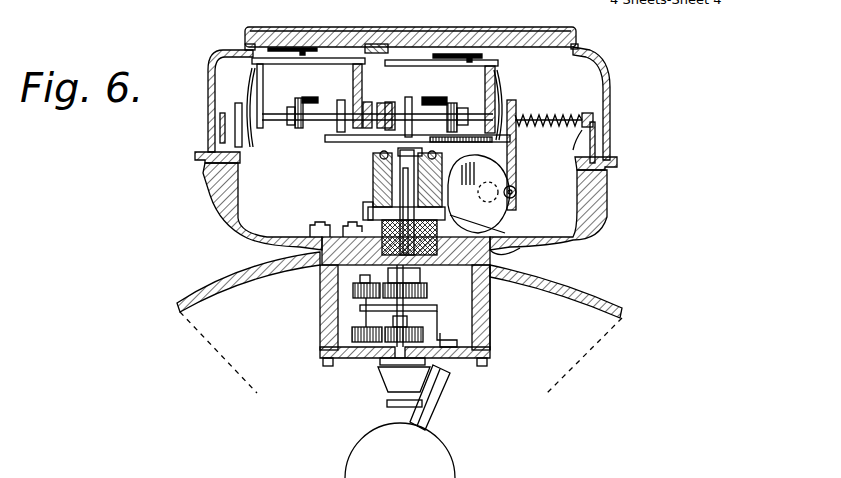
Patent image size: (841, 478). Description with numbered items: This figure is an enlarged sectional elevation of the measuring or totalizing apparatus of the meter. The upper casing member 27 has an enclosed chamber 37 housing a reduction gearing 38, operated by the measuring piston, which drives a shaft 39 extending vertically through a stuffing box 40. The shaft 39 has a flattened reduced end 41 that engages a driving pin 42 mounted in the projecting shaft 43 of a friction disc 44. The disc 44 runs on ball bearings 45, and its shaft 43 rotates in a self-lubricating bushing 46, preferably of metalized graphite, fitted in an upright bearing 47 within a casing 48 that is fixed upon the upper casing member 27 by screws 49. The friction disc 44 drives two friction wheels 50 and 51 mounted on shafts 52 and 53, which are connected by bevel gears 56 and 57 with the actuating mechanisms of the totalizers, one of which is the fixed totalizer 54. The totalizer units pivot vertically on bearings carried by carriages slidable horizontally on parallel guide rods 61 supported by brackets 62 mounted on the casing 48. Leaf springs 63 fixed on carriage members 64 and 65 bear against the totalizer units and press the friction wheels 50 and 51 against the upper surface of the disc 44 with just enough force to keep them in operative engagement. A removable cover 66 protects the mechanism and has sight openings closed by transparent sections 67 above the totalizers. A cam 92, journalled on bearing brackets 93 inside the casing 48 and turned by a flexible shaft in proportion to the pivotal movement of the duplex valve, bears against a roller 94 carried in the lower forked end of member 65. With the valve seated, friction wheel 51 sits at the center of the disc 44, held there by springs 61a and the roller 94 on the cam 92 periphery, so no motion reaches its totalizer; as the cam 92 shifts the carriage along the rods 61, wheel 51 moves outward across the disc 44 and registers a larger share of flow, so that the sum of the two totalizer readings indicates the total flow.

The upper casing member 27 is at (212, 287).
The enclosed chamber 37 is at (483, 330).
The reduction gearing 38 is at (425, 330).
The shaft 39 is at (393, 267).
The stuffing box 40 is at (365, 212).
The flattened reduced end 41 is at (373, 187).
The driving pin 42 is at (375, 205).
The shaft of friction disc 43 is at (380, 146).
The friction disc 44 is at (516, 143).
The ball bearings 45 is at (505, 160).
The bushing 46 is at (500, 217).
The upright bearing 47 is at (372, 170).
The casing 48 is at (217, 197).
The screws 49 is at (312, 230).
The friction wheel 50 is at (340, 102).
The friction wheel 51 is at (408, 100).
The shaft 52 is at (278, 112).
The shaft 53 is at (466, 114).
The totalizer 54 is at (330, 60).
The bevel gear 56 is at (310, 100).
The bevel gear 57 is at (452, 103).
The guide rods 61 is at (584, 113).
The springs 61a is at (607, 158).
The brackets 62 is at (222, 122).
The leaf springs 63 is at (252, 80).
The member 64 is at (223, 137).
The member 65 is at (570, 112).
The cover 66 is at (603, 120).
The transparent sections 67 is at (296, 38).
The cam 92 is at (520, 246).
The bearing brackets 93 is at (497, 272).
The roller 94 is at (517, 188).